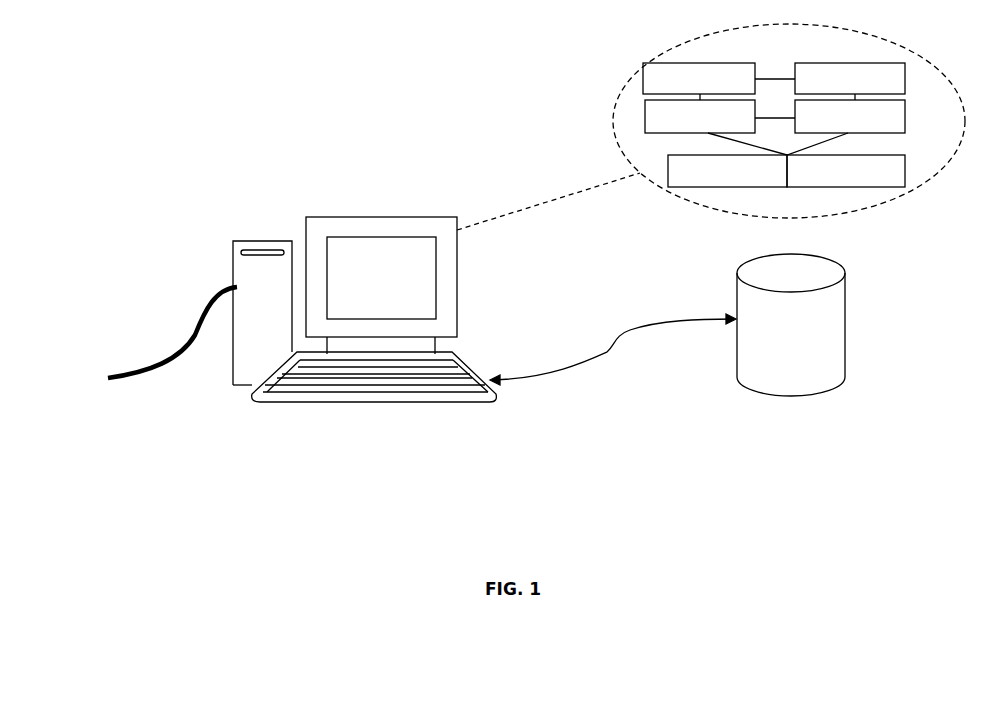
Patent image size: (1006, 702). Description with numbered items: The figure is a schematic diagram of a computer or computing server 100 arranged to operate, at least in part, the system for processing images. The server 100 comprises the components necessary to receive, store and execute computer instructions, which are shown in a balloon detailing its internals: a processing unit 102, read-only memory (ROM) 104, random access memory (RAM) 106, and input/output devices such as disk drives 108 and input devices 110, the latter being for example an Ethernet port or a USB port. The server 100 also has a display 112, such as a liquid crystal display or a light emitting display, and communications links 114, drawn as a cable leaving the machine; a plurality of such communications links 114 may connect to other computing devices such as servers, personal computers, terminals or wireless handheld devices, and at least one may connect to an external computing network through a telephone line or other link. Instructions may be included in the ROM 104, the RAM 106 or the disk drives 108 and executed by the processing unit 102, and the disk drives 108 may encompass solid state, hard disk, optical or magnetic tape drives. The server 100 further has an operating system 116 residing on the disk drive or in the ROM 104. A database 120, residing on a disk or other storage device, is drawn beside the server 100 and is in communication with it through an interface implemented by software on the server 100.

The server 100 is at (364, 326).
The processing unit 102 is at (699, 78).
The read-only memory (ROM) 104 is at (850, 78).
The random access memory (RAM) 106 is at (700, 116).
The disk drives 108 is at (850, 116).
The input devices 110 is at (727, 171).
The display 112 is at (386, 208).
The communications links 114 is at (137, 390).
The operating system 116 is at (846, 171).
The database 120 is at (791, 325).